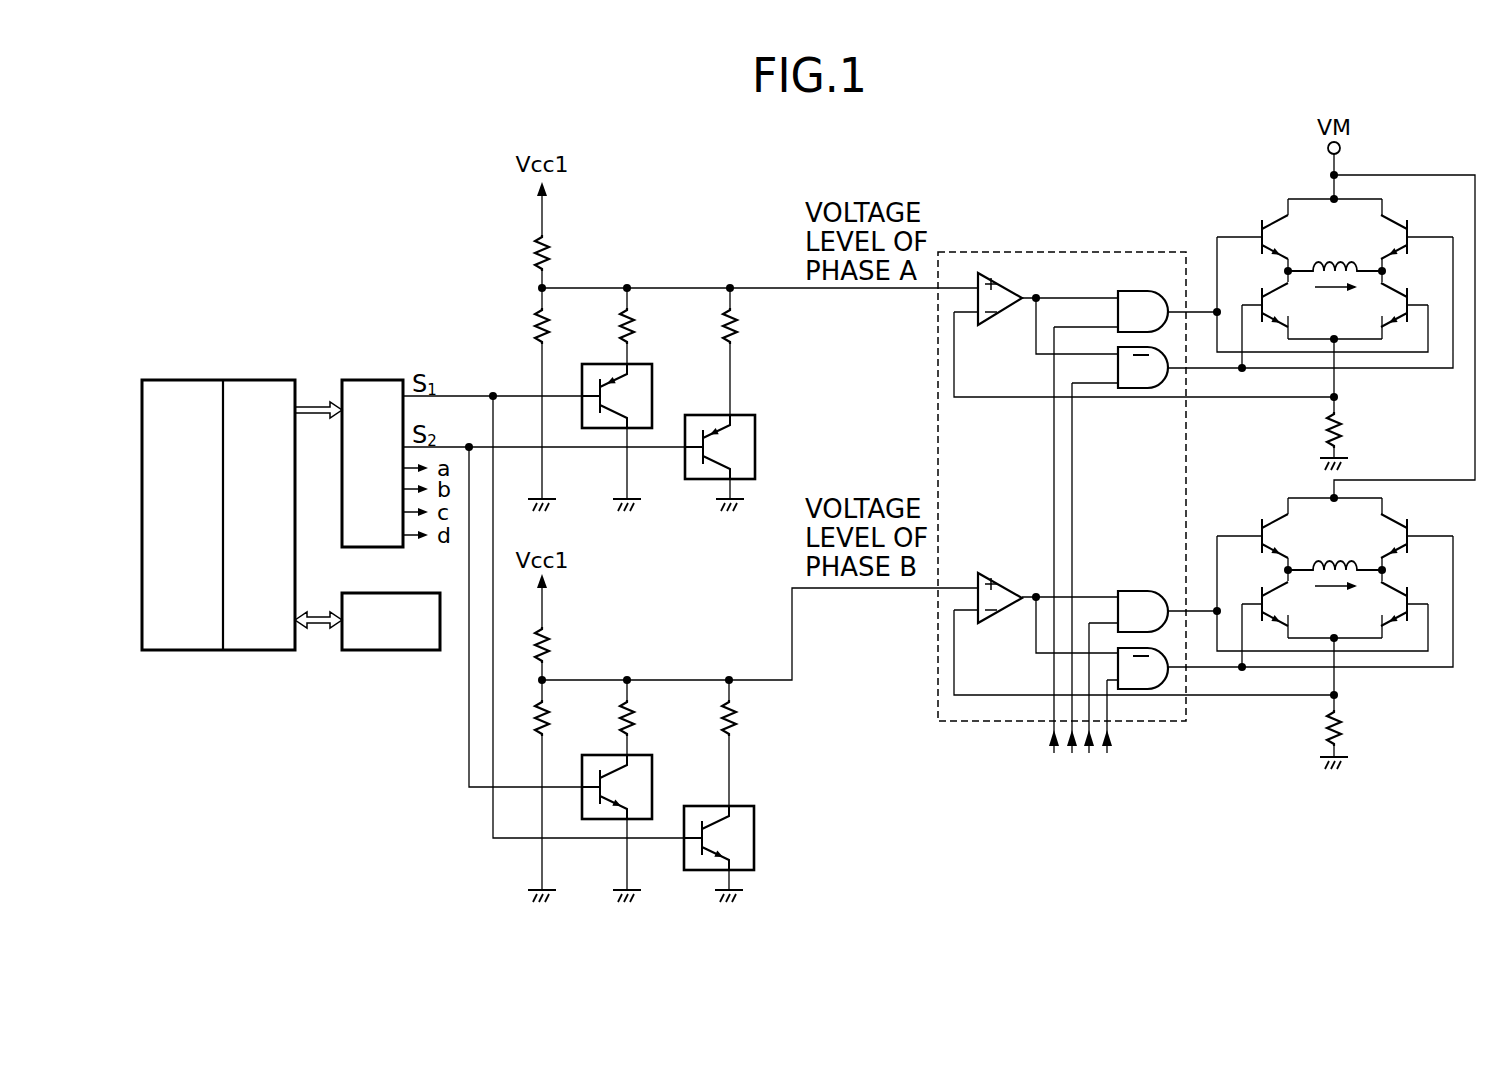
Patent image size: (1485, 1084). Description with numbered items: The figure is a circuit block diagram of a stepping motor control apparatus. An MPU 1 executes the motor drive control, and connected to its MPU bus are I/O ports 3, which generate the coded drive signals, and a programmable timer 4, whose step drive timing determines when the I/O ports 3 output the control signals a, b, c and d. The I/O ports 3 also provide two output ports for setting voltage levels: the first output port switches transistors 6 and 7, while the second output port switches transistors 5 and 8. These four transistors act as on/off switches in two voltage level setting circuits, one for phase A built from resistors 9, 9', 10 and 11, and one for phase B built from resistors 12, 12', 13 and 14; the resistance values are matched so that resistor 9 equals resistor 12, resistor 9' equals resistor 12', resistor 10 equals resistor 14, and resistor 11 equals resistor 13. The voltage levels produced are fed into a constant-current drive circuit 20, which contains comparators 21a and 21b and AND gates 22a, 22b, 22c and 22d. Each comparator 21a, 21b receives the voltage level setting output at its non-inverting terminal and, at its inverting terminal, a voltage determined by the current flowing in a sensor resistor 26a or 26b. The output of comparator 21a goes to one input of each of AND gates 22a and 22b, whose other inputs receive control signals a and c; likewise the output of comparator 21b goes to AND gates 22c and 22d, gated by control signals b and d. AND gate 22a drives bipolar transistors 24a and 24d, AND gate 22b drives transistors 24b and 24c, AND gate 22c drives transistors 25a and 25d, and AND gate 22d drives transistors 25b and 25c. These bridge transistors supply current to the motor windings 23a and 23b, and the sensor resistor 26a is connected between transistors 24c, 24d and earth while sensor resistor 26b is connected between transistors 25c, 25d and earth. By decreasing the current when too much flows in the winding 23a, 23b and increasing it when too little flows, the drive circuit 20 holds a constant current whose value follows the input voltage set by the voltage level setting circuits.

The MPU 1 is at (209, 380).
The I/O ports 3 is at (382, 380).
The programmable timer 4 is at (382, 651).
The transistor 5 is at (755, 445).
The transistor 6 is at (652, 392).
The transistor 7 is at (754, 836).
The transistor 8 is at (652, 784).
The resistor 9 is at (567, 250).
The resistor 9' is at (568, 323).
The resistor 10 is at (634, 316).
The resistor 11 is at (737, 316).
The resistor 12 is at (571, 642).
The resistor 12' is at (575, 715).
The resistor 13 is at (634, 708).
The resistor 14 is at (736, 708).
The constant-current drive circuit 20 is at (1057, 252).
The comparator 21a is at (1003, 318).
The comparator 21b is at (1003, 617).
The AND gate 22a is at (1136, 291).
The AND gate 22b is at (1134, 388).
The AND gate 22c is at (1136, 591).
The AND gate 22d is at (1147, 689).
The motor winding 23a is at (1342, 264).
The motor winding 23b is at (1342, 563).
The bipolar transistor 24a is at (1272, 220).
The bipolar transistor 24b is at (1396, 224).
The bipolar transistor 24c is at (1262, 301).
The bipolar transistor 24d is at (1410, 300).
The bipolar transistor 25a is at (1272, 520).
The bipolar transistor 25b is at (1398, 528).
The bipolar transistor 25c is at (1262, 600).
The bipolar transistor 25d is at (1410, 599).
The sensor resistor 26a is at (1342, 418).
The sensor resistor 26b is at (1342, 716).